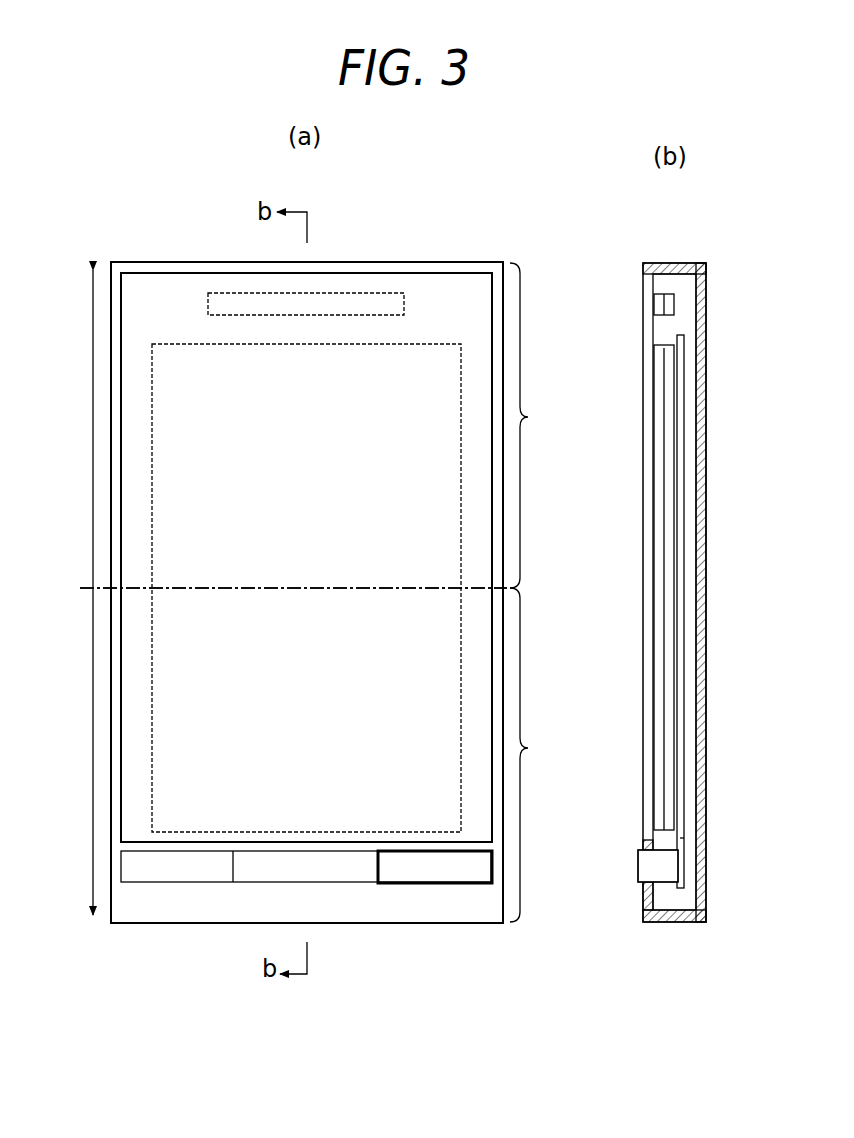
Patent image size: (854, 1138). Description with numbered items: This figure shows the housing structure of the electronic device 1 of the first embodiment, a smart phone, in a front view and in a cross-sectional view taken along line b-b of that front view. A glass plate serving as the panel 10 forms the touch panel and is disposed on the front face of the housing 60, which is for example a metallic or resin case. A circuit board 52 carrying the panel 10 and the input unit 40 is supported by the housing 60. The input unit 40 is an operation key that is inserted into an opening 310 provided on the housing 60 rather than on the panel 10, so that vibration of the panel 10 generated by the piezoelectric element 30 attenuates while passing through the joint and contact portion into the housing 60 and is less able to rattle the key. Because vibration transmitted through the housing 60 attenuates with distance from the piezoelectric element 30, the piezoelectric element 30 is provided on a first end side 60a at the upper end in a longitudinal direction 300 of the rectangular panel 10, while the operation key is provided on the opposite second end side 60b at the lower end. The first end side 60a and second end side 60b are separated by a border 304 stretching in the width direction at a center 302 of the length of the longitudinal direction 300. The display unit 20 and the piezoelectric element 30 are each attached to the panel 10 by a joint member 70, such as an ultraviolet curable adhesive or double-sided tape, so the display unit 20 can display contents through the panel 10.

The electronic device 1 is at (173, 248).
The panel 10 is at (419, 272).
The display unit 20 is at (418, 344).
The piezoelectric element 30 is at (208, 302).
The input unit 40 is at (134, 873).
The circuit board 52 is at (684, 838).
The housing 60 is at (341, 262).
The first end side 60a is at (540, 425).
The second end side 60b is at (540, 755).
The joint member 70 is at (658, 293).
The longitudinal direction 300 is at (92, 288).
The center 302 is at (273, 587).
The border 304 is at (388, 587).
The opening 310 is at (393, 884).